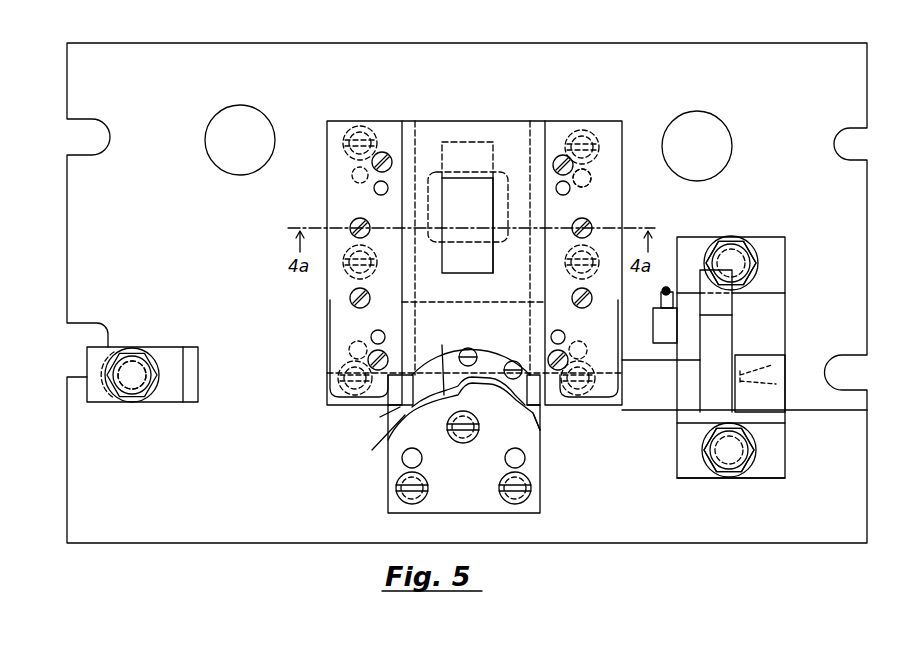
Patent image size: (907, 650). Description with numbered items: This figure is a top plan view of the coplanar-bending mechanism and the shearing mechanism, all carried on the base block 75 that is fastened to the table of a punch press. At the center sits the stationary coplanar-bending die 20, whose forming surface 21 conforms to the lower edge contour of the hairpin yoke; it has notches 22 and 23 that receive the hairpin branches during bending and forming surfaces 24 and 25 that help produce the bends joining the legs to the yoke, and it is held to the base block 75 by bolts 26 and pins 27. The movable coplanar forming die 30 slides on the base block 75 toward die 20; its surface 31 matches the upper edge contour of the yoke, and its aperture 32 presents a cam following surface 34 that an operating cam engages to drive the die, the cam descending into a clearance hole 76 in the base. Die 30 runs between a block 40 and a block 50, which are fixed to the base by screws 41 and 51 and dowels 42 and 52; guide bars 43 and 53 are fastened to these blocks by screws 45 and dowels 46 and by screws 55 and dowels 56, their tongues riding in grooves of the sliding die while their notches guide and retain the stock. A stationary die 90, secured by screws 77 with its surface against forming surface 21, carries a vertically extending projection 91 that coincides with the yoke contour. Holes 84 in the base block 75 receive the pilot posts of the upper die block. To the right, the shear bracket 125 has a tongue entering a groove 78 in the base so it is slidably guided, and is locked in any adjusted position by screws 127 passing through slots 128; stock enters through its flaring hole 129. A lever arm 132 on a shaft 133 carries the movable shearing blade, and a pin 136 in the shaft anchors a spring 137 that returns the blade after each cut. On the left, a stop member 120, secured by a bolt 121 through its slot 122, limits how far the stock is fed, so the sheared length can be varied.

The stationary coplanar-bending die 20 is at (497, 508).
The forming surface 21 is at (500, 397).
The notch 22 is at (533, 413).
The notch 23 is at (375, 441).
The forming surface 24 is at (445, 427).
The forming surface 25 is at (520, 429).
The bolt 26 is at (531, 484).
The pin 27 is at (408, 463).
The movable coplanar forming die 30 is at (500, 130).
The surface 31 is at (477, 361).
The aperture 32 is at (487, 233).
The cam following surface 34 is at (457, 255).
The block 40 is at (330, 410).
The screw 41 is at (369, 130).
The dowel 42 is at (352, 170).
The guide bar 43 is at (342, 178).
The screw 45 is at (352, 224).
The dowel 46 is at (378, 194).
The block 50 is at (597, 407).
The screw 51 is at (594, 135).
The dowel 52 is at (590, 176).
The guide bar 53 is at (606, 182).
The screw 55 is at (566, 156).
The dowel 56 is at (570, 191).
The base block 75 is at (862, 490).
The clearance hole 76 is at (428, 178).
The screw 77 is at (510, 360).
The groove 78 is at (808, 412).
The hole 84 is at (243, 118).
The stationary die 90 is at (376, 418).
The projection 91 is at (439, 358).
The stop member 120 is at (173, 352).
The bolt 121 is at (131, 400).
The slot 122 is at (125, 358).
The shear bracket 125 is at (690, 458).
The screw 127 is at (732, 240).
The slot 128 is at (756, 256).
The hole 129 is at (762, 380).
The lever arm 132 is at (722, 322).
The shaft 133 is at (665, 334).
The pin 136 is at (660, 300).
The spring 137 is at (668, 288).